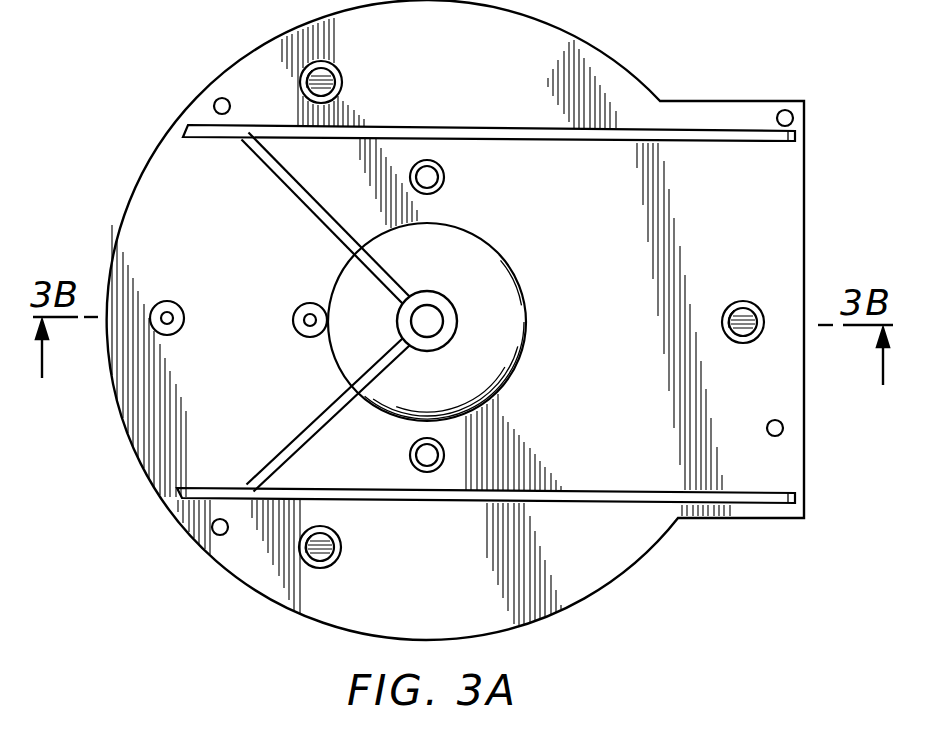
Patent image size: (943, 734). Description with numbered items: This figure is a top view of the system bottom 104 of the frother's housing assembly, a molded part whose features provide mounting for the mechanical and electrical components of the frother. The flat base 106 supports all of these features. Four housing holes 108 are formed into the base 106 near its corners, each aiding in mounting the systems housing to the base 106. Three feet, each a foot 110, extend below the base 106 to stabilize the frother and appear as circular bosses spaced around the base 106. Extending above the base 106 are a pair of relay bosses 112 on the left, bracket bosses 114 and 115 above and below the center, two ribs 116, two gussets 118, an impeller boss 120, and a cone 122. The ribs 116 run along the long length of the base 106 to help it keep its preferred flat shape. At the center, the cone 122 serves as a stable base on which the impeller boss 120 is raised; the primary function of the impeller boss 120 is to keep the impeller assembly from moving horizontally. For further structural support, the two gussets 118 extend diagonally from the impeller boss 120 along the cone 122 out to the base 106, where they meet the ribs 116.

The system bottom 104 is at (613, 48).
The base 106 is at (493, 613).
The housing holes 108 is at (220, 98).
The foot 110 is at (332, 88).
The relay bosses 112 is at (294, 328).
The bracket boss 114 is at (411, 458).
The bracket boss 115 is at (445, 180).
The ribs 116 is at (521, 128).
The gussets 118 is at (320, 216).
The impeller boss 120 is at (441, 294).
The cone 122 is at (490, 330).